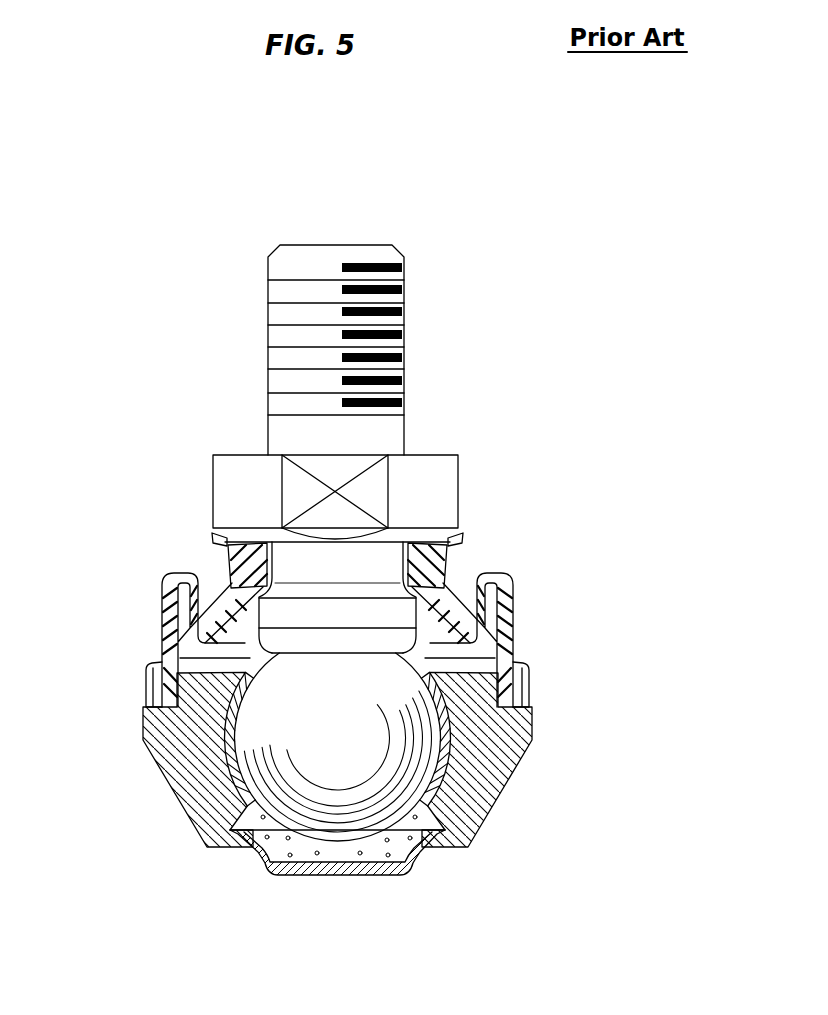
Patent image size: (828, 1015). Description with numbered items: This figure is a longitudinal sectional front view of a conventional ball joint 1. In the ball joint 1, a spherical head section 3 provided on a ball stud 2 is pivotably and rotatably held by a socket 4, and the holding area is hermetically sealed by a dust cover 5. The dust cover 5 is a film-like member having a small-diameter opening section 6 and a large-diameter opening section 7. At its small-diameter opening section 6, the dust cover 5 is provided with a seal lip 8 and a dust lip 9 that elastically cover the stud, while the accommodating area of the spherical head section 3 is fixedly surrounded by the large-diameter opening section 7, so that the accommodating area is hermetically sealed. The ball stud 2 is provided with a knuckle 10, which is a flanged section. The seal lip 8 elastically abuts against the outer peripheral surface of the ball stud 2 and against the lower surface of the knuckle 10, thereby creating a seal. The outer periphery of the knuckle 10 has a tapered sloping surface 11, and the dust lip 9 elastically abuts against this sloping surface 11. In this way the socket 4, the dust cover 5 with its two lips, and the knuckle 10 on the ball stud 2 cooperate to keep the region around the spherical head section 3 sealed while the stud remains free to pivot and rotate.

The ball joint 1 is at (502, 236).
The ball stud 2 is at (404, 345).
The spherical head section 3 is at (368, 834).
The socket 4 is at (517, 775).
The dust cover 5 is at (510, 598).
The small-diameter opening section 6 is at (228, 558).
The large-diameter opening section 7 is at (140, 672).
The seal lip 8 is at (267, 568).
The dust lip 9 is at (217, 546).
The knuckle 10 is at (458, 472).
The sloping surface 11 is at (418, 537).